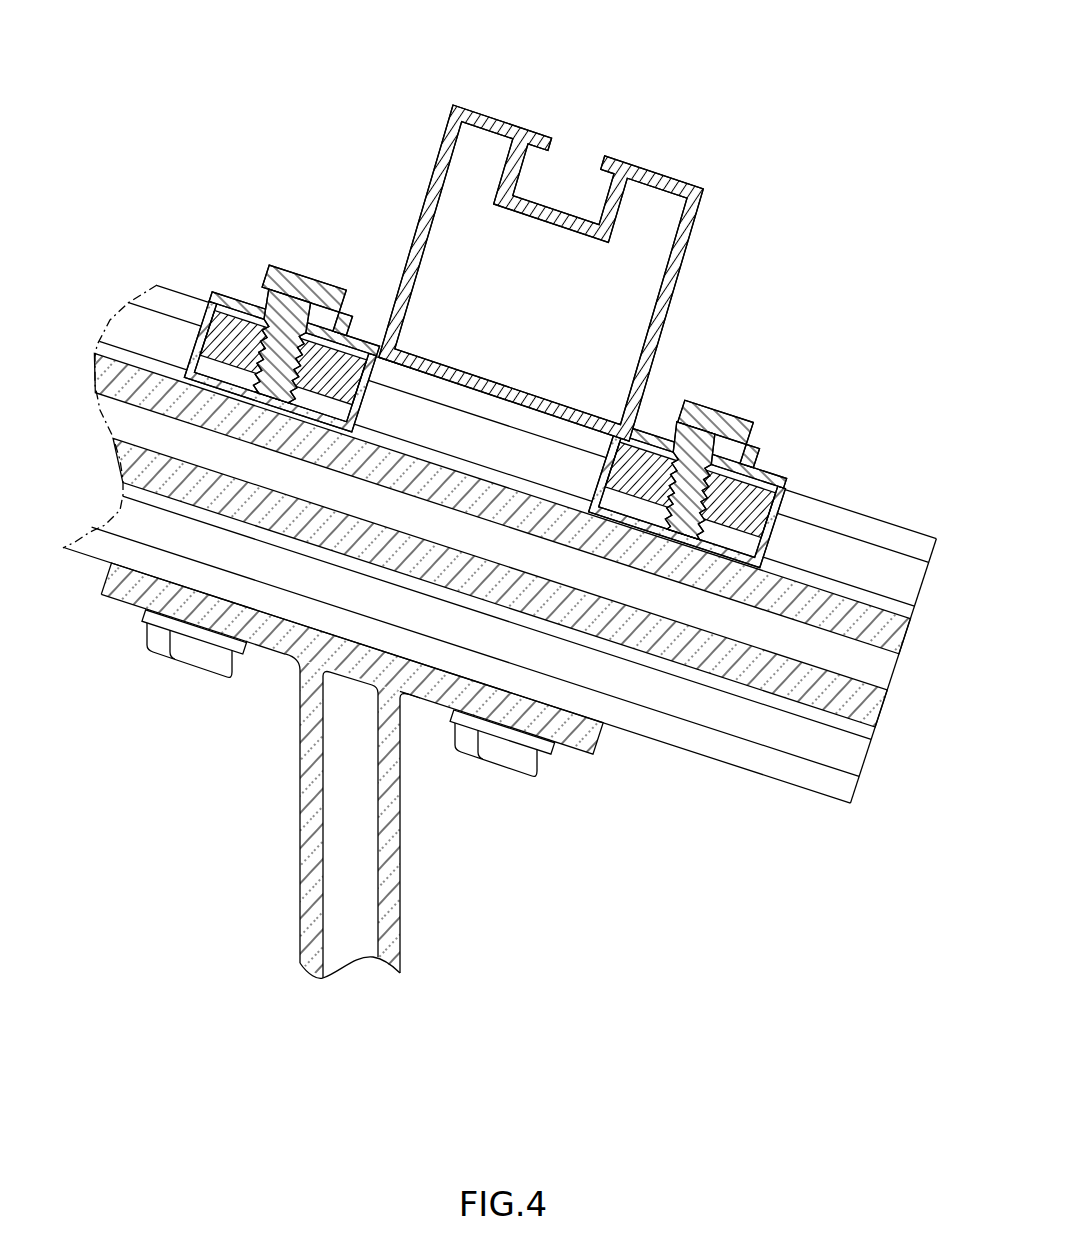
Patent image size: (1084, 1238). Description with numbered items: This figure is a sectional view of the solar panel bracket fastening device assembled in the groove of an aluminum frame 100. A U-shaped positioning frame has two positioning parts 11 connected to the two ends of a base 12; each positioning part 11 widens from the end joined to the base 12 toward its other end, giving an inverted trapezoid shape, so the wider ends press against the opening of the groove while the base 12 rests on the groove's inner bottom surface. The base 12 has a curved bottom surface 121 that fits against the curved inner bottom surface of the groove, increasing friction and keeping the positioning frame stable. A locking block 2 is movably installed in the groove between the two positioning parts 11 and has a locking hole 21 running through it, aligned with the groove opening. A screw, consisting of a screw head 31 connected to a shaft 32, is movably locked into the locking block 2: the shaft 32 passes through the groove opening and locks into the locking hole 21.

The aluminum frame 100 is at (672, 160).
The positioning part 11 is at (605, 470).
The base 12 is at (757, 563).
The curved bottom surface 121 is at (677, 515).
The locking block 2 is at (524, 549).
The locking hole 21 is at (697, 411).
The screw head 31 is at (706, 400).
The shaft 32 is at (714, 518).